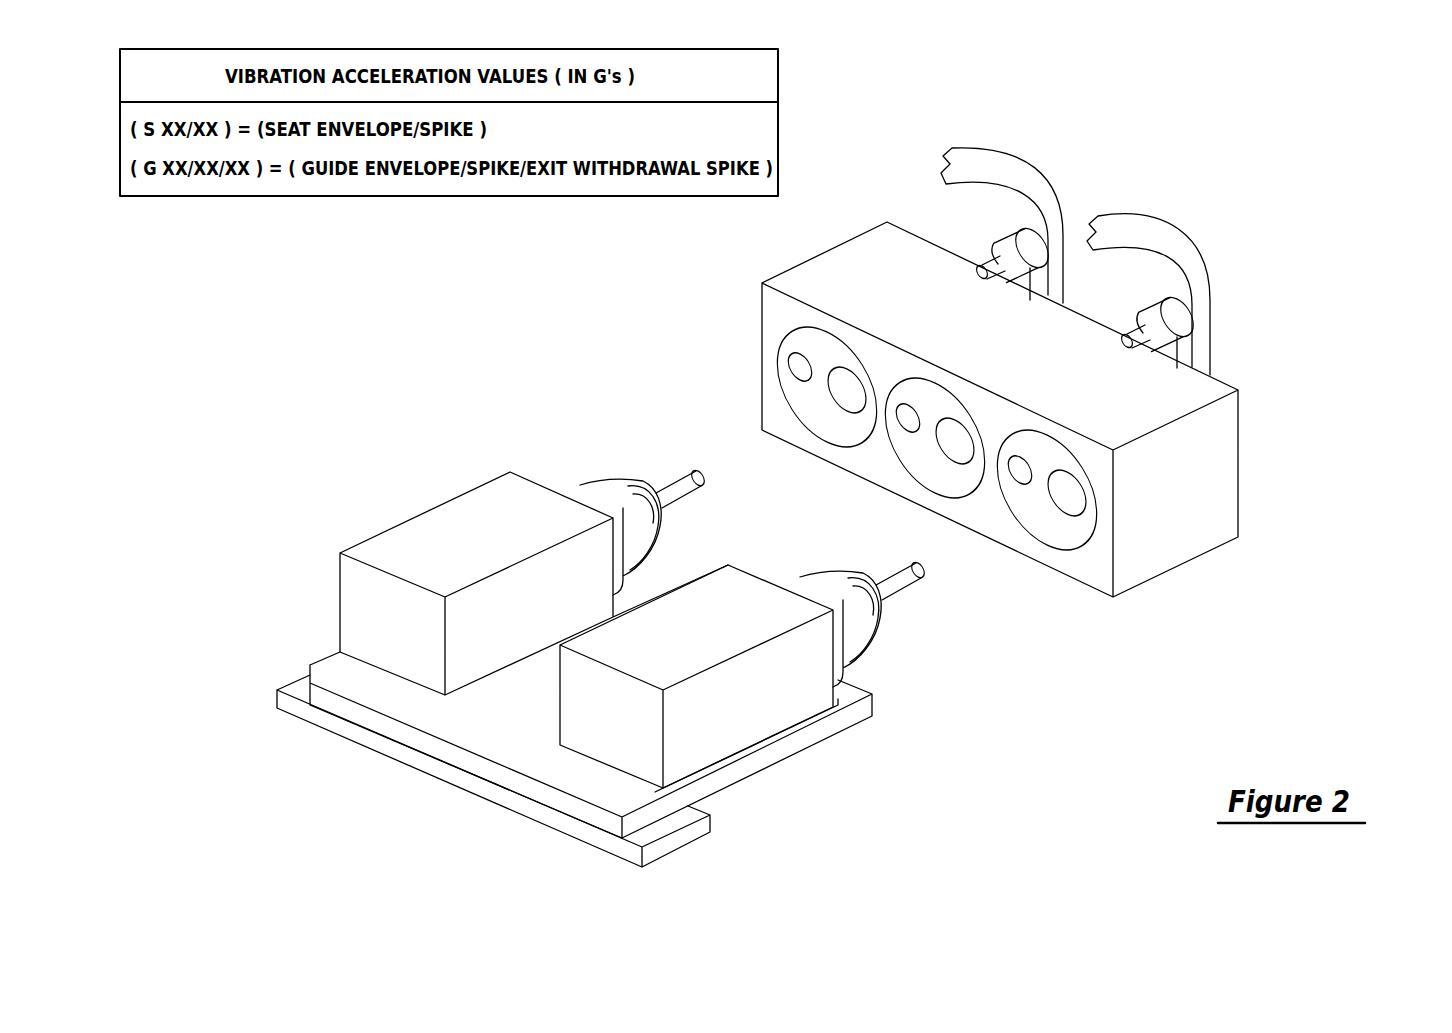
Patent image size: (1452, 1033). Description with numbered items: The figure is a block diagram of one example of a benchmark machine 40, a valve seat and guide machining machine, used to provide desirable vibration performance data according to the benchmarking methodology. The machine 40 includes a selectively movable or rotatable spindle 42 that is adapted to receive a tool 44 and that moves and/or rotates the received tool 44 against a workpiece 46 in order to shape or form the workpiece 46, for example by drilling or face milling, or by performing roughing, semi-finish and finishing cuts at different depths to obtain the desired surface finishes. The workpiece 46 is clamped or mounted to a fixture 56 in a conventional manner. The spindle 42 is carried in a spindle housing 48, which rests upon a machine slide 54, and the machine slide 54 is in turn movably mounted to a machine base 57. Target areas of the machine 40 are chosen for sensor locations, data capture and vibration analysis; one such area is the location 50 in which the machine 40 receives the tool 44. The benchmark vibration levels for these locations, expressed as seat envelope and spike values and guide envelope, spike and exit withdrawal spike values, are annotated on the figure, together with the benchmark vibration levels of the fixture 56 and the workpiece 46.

The machine 40 is at (318, 562).
The spindle 42 is at (610, 495).
The tool 44 is at (687, 478).
The workpiece 46 is at (1188, 512).
The spindle housing 48 is at (494, 551).
The area or location 50 is at (655, 490).
The machine slide 54 is at (717, 778).
The fixture 56 is at (997, 146).
The machine base 57 is at (668, 840).